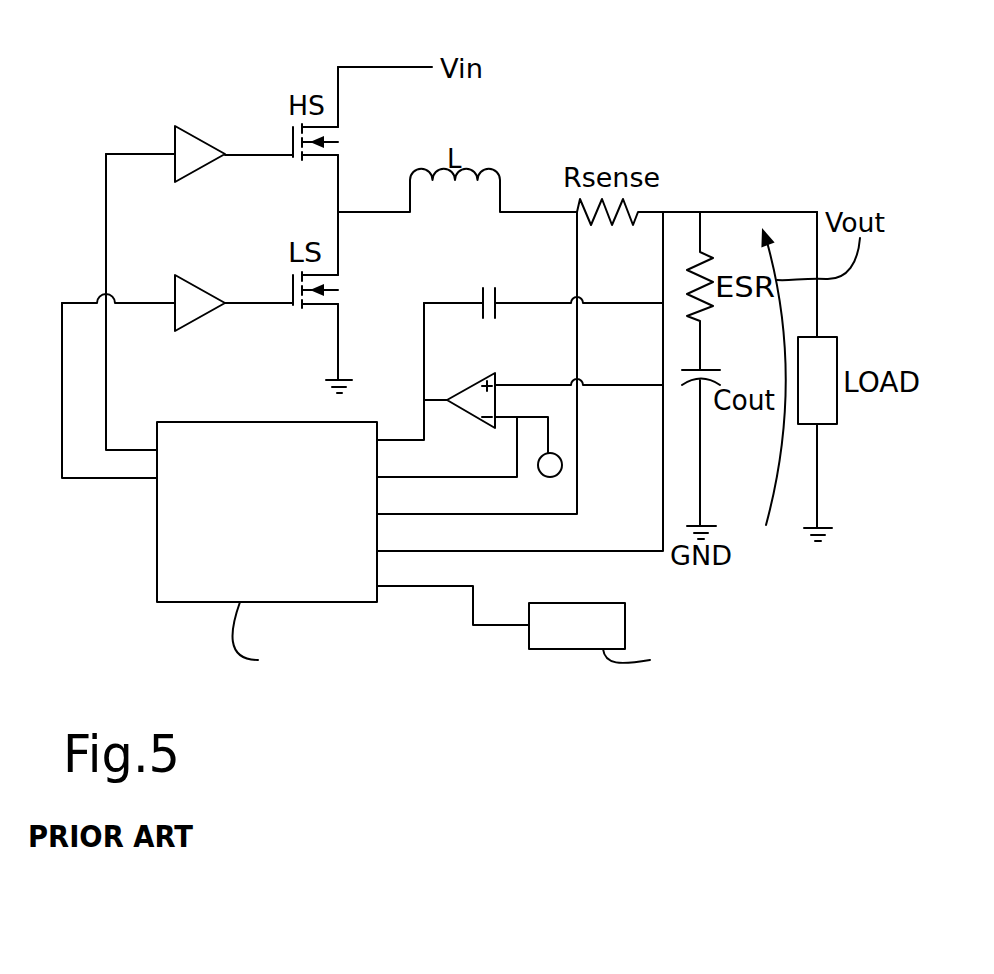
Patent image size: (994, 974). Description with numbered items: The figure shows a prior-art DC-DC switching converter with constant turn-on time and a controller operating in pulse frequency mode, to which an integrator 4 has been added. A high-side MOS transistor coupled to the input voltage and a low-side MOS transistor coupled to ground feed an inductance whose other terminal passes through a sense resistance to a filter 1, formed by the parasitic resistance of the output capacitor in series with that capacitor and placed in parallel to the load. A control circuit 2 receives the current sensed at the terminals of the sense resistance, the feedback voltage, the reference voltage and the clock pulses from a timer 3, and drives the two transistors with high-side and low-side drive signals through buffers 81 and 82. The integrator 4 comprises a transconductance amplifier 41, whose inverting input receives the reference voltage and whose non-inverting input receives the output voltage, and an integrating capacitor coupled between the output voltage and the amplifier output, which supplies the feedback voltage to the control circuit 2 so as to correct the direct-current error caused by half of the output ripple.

The filter 1 is at (726, 200).
The control circuit 2 is at (108, 586).
The timer 3 is at (592, 640).
The integrator 4 is at (446, 283).
The transconductance amplifier 41 is at (497, 378).
The buffer 81 is at (187, 128).
The buffer 82 is at (198, 287).